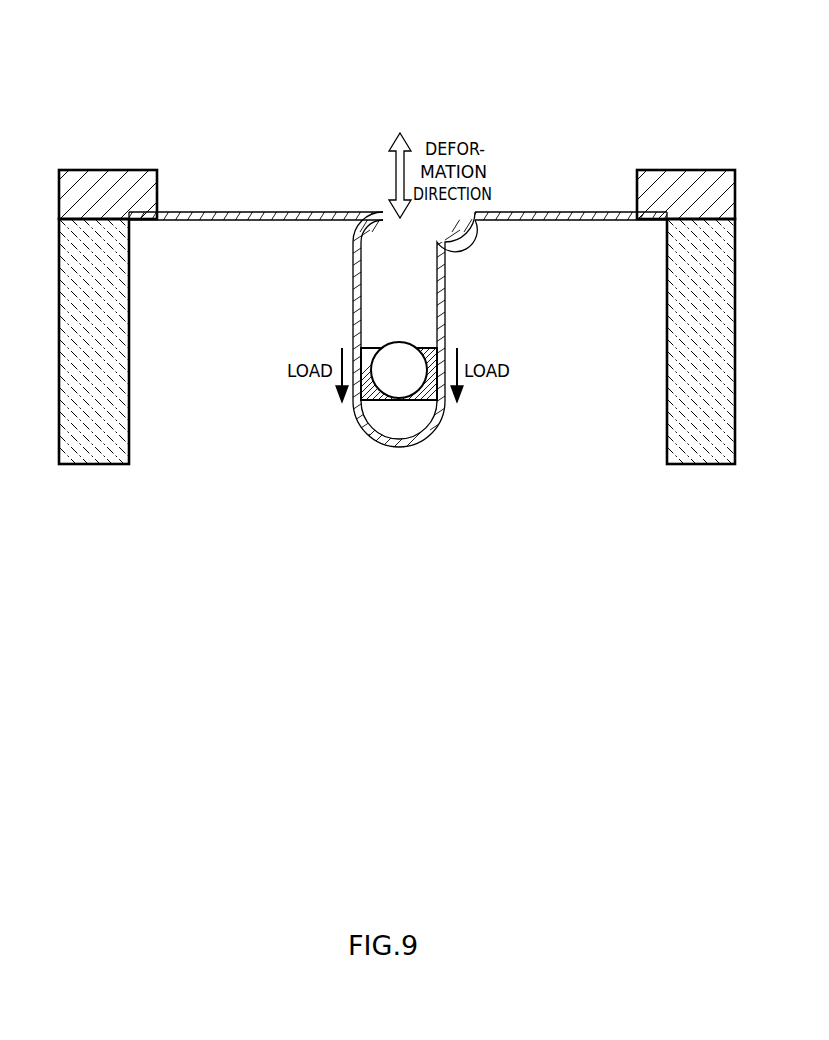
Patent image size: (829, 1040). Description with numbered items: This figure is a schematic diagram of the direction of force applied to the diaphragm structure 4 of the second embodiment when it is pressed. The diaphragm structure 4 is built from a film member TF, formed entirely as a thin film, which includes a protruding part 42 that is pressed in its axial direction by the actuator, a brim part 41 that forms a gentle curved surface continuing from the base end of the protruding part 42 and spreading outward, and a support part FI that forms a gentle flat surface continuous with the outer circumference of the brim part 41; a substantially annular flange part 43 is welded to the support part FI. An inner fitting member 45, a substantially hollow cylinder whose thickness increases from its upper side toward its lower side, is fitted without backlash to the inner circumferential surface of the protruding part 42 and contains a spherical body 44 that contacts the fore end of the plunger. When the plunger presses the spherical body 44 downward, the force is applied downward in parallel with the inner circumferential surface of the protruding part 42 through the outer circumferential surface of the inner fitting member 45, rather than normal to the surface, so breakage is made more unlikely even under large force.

The diaphragm structure 4 is at (408, 285).
The brim part 41 is at (247, 212).
The protruding part 42 is at (445, 279).
The flange part 43 is at (110, 170).
The spherical body 44 is at (400, 342).
The inner fitting member 45 is at (373, 403).
The support part FI is at (140, 210).
The film member TF is at (398, 290).